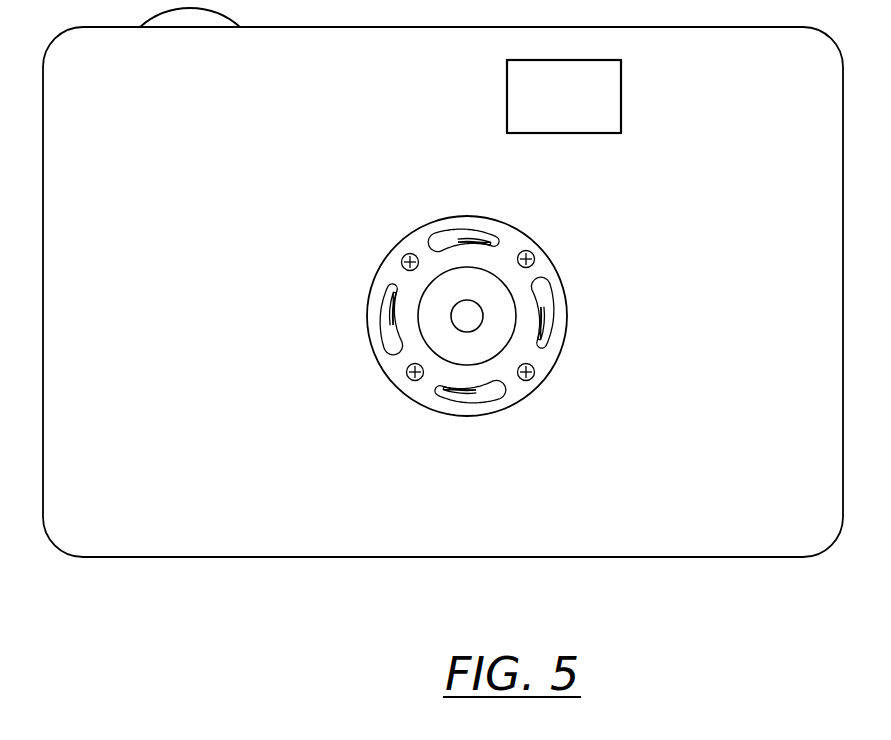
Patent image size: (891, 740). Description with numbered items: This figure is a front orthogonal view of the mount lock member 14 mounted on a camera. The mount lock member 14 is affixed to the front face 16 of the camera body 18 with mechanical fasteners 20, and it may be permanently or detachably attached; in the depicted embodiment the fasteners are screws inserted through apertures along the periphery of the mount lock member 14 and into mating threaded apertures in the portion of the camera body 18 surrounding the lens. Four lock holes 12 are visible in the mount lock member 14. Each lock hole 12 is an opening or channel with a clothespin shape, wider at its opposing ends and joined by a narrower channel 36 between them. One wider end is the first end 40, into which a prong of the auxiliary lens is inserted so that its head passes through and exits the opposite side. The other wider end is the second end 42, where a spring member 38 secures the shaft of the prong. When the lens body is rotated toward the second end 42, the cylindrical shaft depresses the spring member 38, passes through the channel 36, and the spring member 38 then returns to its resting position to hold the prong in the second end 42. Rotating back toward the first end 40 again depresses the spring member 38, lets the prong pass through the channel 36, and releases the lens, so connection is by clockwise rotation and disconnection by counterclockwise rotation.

The lock hole 12 is at (553, 307).
The mount lock member 14 is at (388, 280).
The front face 16 is at (222, 499).
The camera body 18 is at (833, 413).
The mechanical fasteners 20 is at (533, 255).
The channel 36 is at (465, 233).
The spring member 38 is at (469, 233).
The first end 40 is at (434, 225).
The second end 42 is at (497, 227).